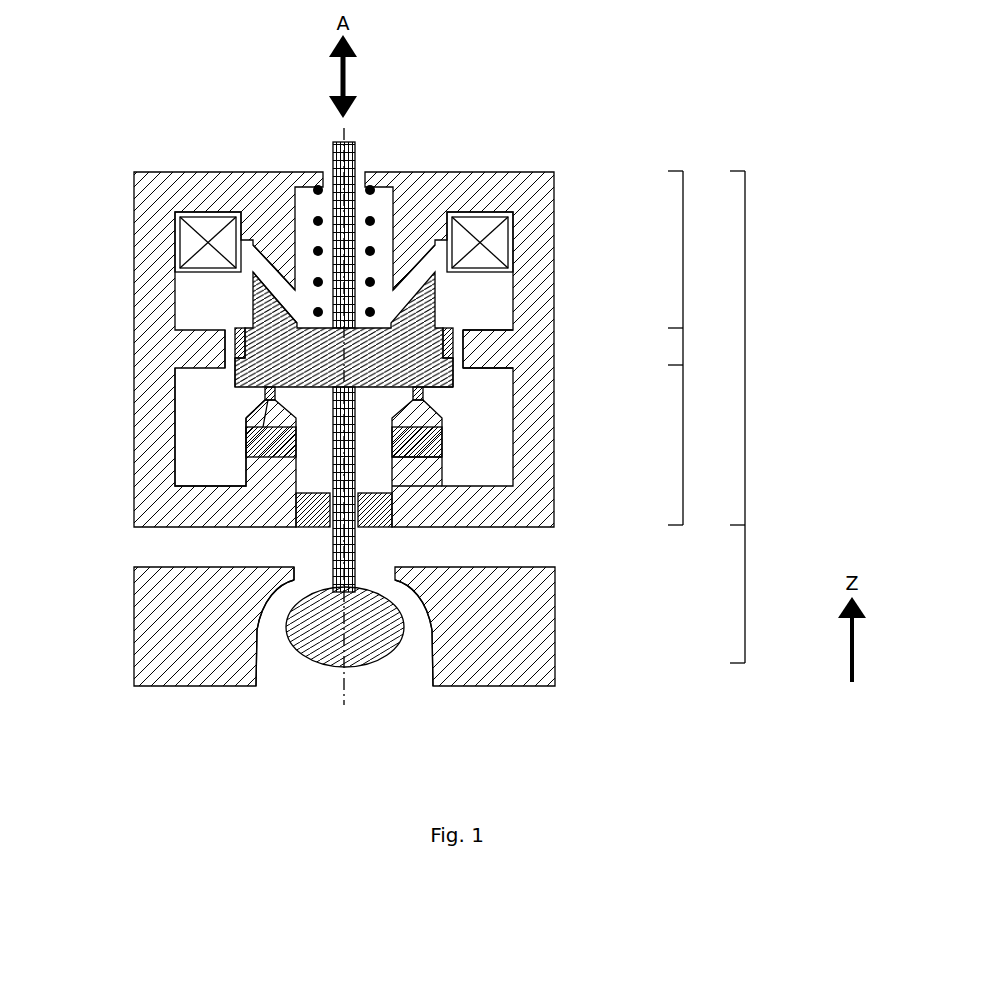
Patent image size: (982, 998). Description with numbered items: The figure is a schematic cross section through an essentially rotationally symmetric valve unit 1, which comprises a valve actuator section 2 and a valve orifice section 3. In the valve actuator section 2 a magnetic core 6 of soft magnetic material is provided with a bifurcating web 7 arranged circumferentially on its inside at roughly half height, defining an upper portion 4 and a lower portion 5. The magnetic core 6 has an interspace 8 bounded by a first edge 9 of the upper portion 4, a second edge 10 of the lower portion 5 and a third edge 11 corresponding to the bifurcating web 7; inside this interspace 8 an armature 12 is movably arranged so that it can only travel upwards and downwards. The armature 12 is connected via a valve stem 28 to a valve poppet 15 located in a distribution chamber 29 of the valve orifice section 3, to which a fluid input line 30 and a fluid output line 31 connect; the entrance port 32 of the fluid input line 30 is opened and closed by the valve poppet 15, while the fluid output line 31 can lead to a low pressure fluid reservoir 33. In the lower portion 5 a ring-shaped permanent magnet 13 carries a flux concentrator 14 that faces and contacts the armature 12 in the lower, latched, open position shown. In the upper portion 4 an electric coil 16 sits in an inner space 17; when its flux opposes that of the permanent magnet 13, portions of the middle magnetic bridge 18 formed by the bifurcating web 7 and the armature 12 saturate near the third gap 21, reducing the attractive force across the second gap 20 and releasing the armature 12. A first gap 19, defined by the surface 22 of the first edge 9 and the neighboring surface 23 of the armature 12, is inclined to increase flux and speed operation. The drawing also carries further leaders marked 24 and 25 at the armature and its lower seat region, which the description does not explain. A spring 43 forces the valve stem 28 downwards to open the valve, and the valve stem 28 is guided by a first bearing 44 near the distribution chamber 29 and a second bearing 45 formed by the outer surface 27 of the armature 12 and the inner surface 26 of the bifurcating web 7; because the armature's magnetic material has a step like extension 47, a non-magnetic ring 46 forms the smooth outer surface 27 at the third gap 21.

The valve unit 1 is at (623, 75).
The valve actuator section 2 is at (747, 348).
The valve orifice section 3 is at (747, 593).
The upper portion 4 is at (686, 267).
The lower portion 5 is at (686, 434).
The magnetic core 6 is at (542, 181).
The bifurcating web 7 is at (503, 344).
The interspace 8 is at (448, 296).
The first edge 9 is at (418, 252).
The second edge 10 is at (247, 456).
The third edge 11 is at (469, 353).
The armature 12 is at (262, 322).
The permanent magnet 13 is at (436, 449).
The flux concentrator 14 is at (437, 431).
The valve poppet 15 is at (300, 632).
The electric coil 16 is at (501, 240).
The inner space 17 is at (473, 210).
The middle magnetic bridge 18 is at (686, 347).
The first gap 19 is at (262, 262).
The second gap 20 is at (249, 398).
The third gap 21 is at (459, 369).
The surface of the first edge 22 is at (285, 267).
The neighboring surface of the armature 23 is at (262, 283).
The armature side face 24 is at (234, 362).
The stop 25 is at (262, 398).
The inner surface 26 is at (221, 337).
The outer surface 27 is at (453, 389).
The valve stem 28 is at (333, 551).
The distribution chamber 29 is at (399, 675).
The fluid input line 30 is at (379, 697).
The fluid output line 31 is at (467, 558).
The entrance port 32 is at (303, 582).
The low pressure fluid reservoir 33 is at (583, 558).
The spring 43 is at (372, 212).
The first bearing 44 is at (307, 512).
The second bearing 45 is at (458, 326).
The ring 46 is at (237, 345).
The step like extension 47 is at (466, 387).